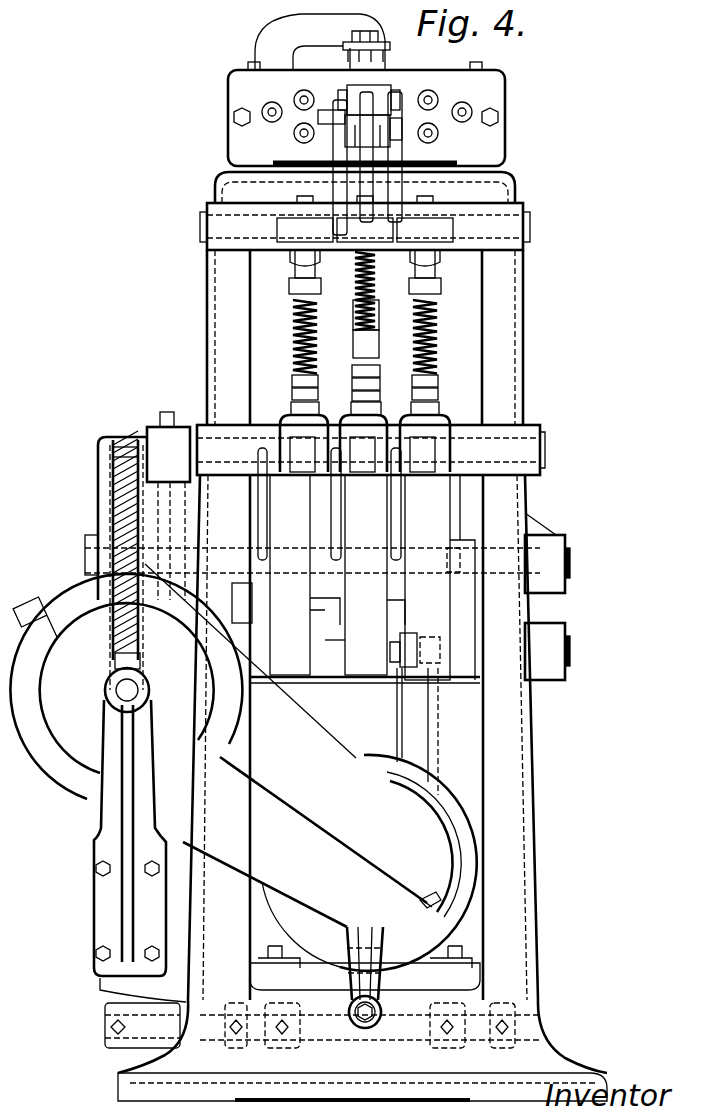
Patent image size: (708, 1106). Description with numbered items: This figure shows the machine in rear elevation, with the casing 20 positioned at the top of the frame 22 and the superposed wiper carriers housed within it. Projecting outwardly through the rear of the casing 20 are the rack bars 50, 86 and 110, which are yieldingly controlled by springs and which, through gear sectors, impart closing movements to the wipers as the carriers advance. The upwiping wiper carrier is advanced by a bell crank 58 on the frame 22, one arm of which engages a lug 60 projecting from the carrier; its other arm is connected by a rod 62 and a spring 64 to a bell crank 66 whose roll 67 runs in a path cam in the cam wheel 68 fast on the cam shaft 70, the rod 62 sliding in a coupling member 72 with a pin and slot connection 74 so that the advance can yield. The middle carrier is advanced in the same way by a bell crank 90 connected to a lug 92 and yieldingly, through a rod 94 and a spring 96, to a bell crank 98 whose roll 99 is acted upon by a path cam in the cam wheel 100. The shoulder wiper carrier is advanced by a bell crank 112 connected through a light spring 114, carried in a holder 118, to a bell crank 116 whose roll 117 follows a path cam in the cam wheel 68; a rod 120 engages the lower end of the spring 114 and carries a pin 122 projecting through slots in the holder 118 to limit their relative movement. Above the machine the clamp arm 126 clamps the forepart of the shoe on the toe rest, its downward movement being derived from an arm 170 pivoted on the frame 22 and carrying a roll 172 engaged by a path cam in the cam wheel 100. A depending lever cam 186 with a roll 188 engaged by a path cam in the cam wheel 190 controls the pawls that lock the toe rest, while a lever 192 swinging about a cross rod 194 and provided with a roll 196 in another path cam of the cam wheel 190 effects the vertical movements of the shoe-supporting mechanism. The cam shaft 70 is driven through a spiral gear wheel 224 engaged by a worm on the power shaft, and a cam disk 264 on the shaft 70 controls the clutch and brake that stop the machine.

The casing 20 is at (497, 136).
The frame 22 is at (517, 278).
The rack bars 50 is at (432, 97).
The bell crank 58 is at (440, 225).
The lug 60 is at (363, 88).
The rod 62 is at (438, 318).
The spring 64 is at (438, 340).
The bell crank 66 is at (430, 468).
The roll 67 is at (372, 575).
The cam wheel 68 is at (366, 575).
The cam shaft 70 is at (570, 563).
The coupling member 72 is at (440, 272).
The pin and slot connection 74 is at (438, 288).
The rack bars 86 is at (470, 110).
The bell crank 90 is at (338, 222).
The lug 92 is at (370, 113).
The rod 94 is at (300, 317).
The spring 96 is at (300, 350).
The bell crank 98 is at (297, 455).
The roll 99 is at (250, 593).
The cam wheel 100 is at (365, 652).
The rack bars 110 is at (440, 135).
The bell crank 112 is at (345, 225).
The spring 114 is at (360, 320).
The bell crank 116 is at (363, 452).
The roll 117 is at (362, 613).
The holder 118 is at (362, 305).
The rod 120 is at (378, 333).
The pin 122 is at (360, 345).
The clamp member or arm 126 is at (332, 23).
The arm 170 is at (322, 518).
The roll 172 is at (300, 580).
The lever cam 186 is at (477, 490).
The roll 188 is at (455, 560).
The cam wheel 190 is at (451, 577).
The lever 192 is at (407, 670).
The cross rod 194 is at (568, 642).
The roll 196 is at (437, 650).
The spiral gear wheel 224 is at (118, 492).
The cam disk 264 is at (180, 520).